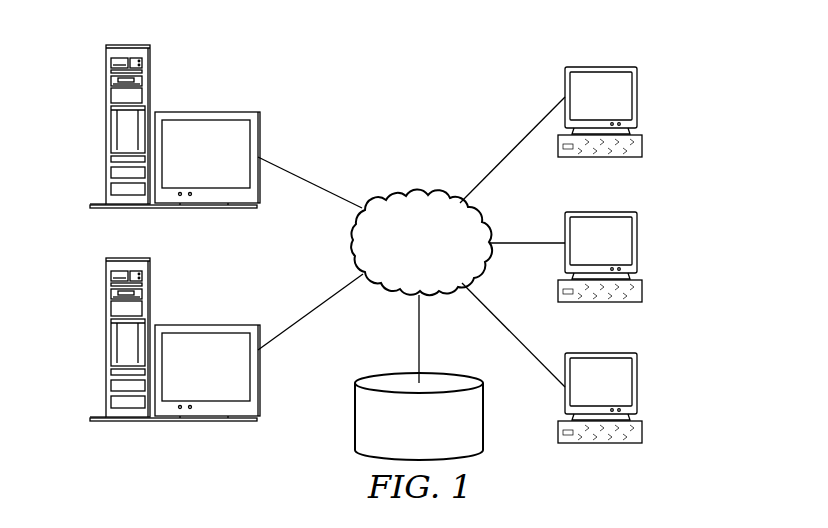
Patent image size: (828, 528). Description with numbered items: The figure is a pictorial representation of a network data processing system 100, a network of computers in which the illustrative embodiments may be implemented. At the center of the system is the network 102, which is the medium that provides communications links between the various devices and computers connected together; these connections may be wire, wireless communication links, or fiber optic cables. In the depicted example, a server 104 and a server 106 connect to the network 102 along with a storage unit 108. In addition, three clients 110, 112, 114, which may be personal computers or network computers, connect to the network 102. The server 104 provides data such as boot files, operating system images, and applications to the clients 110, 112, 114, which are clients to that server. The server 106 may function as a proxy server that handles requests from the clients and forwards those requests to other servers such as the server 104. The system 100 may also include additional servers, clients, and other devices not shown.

The network data processing system 100 is at (471, 87).
The network 102 is at (392, 193).
The server 104 is at (107, 129).
The server 106 is at (151, 357).
The storage unit 108 is at (356, 422).
The client 110 is at (637, 98).
The client 112 is at (629, 272).
The client 114 is at (629, 413).